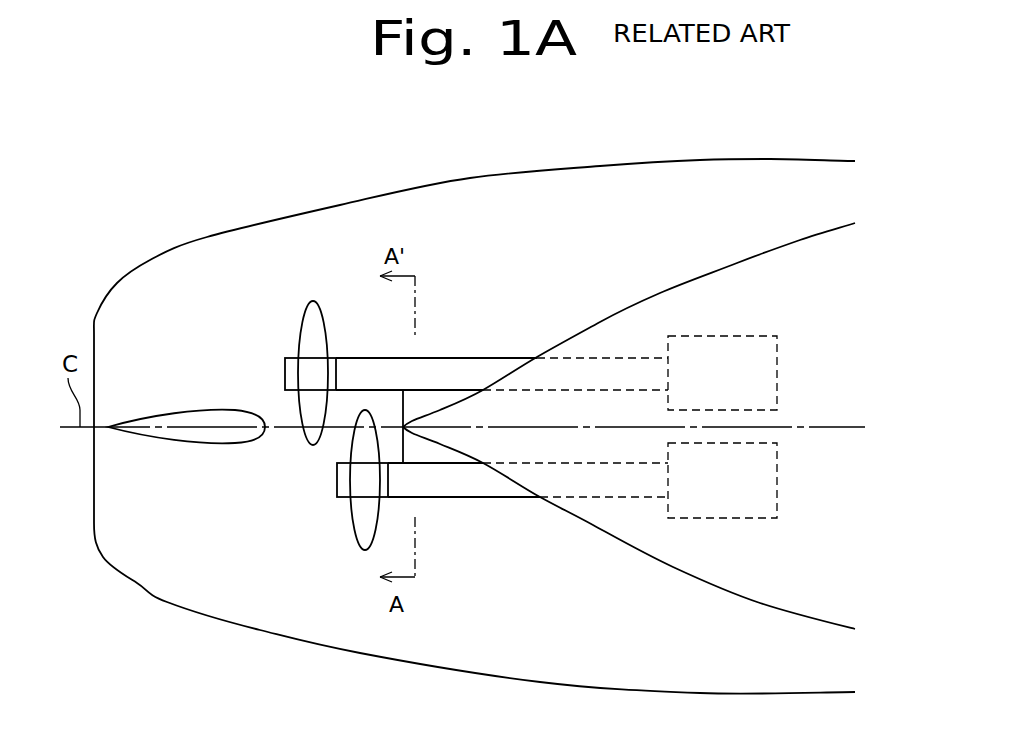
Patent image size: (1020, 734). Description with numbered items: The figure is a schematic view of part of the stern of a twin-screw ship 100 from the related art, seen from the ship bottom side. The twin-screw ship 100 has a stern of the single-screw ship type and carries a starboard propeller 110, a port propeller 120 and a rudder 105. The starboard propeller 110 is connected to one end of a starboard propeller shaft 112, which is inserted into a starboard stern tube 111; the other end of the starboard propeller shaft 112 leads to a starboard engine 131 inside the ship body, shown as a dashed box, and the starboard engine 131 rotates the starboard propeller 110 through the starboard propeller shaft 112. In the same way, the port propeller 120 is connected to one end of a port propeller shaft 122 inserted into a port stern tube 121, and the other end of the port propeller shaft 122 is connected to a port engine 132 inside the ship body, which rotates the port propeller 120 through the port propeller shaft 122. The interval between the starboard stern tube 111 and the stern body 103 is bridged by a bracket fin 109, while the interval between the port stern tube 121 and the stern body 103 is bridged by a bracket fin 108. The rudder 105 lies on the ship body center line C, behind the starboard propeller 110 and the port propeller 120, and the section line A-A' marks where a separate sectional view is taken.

The twin-screw ship 100 is at (175, 190).
The stern body 103 is at (735, 263).
The rudder 105 is at (200, 444).
The bracket fin 108 is at (427, 455).
The bracket fin 109 is at (427, 398).
The starboard propeller 110 is at (307, 328).
The starboard stern tube 111 is at (480, 362).
The starboard propeller shaft 112 is at (611, 367).
The port propeller 120 is at (347, 527).
The port stern tube 121 is at (480, 493).
The port propeller shaft 122 is at (611, 487).
The starboard engine 131 is at (777, 363).
The port engine 132 is at (777, 489).